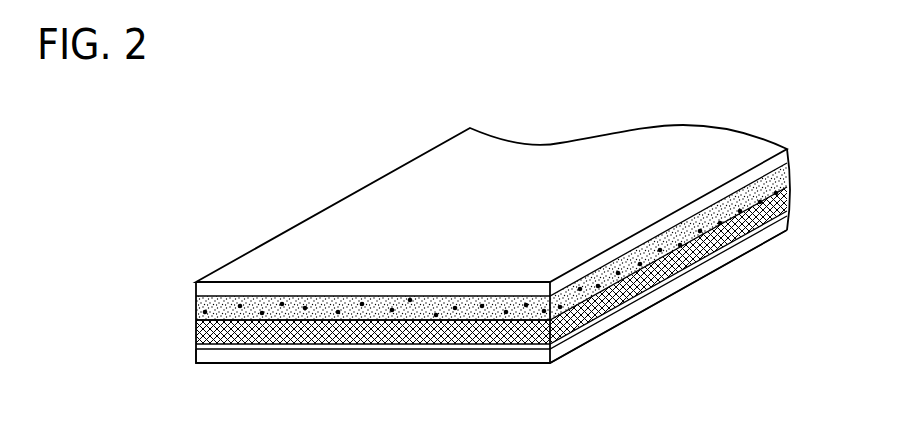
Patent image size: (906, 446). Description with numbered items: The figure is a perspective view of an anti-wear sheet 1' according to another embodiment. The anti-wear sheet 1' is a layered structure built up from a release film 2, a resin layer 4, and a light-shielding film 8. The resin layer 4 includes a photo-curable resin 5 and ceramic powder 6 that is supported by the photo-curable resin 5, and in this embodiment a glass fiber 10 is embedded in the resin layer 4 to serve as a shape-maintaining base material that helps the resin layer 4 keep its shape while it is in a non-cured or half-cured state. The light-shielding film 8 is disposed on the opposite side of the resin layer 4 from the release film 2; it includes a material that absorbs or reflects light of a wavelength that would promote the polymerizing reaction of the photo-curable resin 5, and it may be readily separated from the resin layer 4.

The anti-wear sheet 1' is at (493, 229).
The light-shielding film 8 is at (255, 263).
The photo-curable resin 5 is at (196, 314).
The ceramic powder 6 is at (196, 340).
The resin layer 4 is at (138, 295).
The glass fiber 10 is at (292, 349).
The release film 2 is at (242, 365).